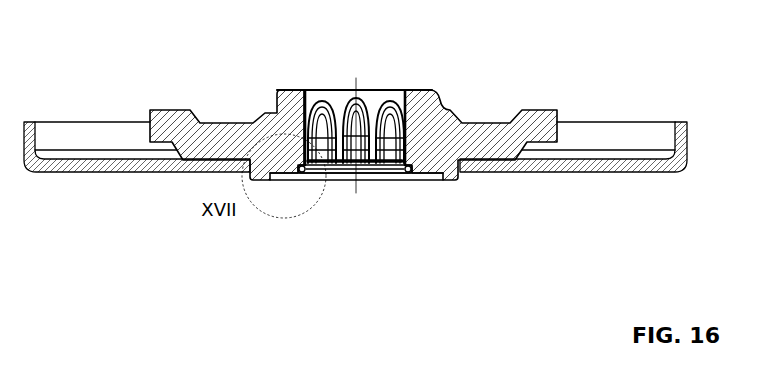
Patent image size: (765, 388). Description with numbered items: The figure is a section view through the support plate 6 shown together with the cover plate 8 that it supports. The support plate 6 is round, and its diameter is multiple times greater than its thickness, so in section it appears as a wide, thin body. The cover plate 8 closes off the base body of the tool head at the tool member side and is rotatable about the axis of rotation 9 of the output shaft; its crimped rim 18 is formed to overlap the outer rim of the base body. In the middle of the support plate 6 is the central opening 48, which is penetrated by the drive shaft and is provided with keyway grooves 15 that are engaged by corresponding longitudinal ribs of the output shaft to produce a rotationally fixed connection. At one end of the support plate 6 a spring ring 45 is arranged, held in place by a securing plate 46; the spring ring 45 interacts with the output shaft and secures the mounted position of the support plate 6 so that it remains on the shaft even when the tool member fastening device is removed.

The support plate 6 is at (223, 138).
The cover plate 8 is at (110, 167).
The axis of rotation 9 is at (357, 78).
The keyway grooves 15 is at (326, 108).
The crimped rim 18 is at (32, 130).
The spring ring 45 is at (375, 183).
The securing plate 46 is at (433, 183).
The central opening 48 is at (315, 83).